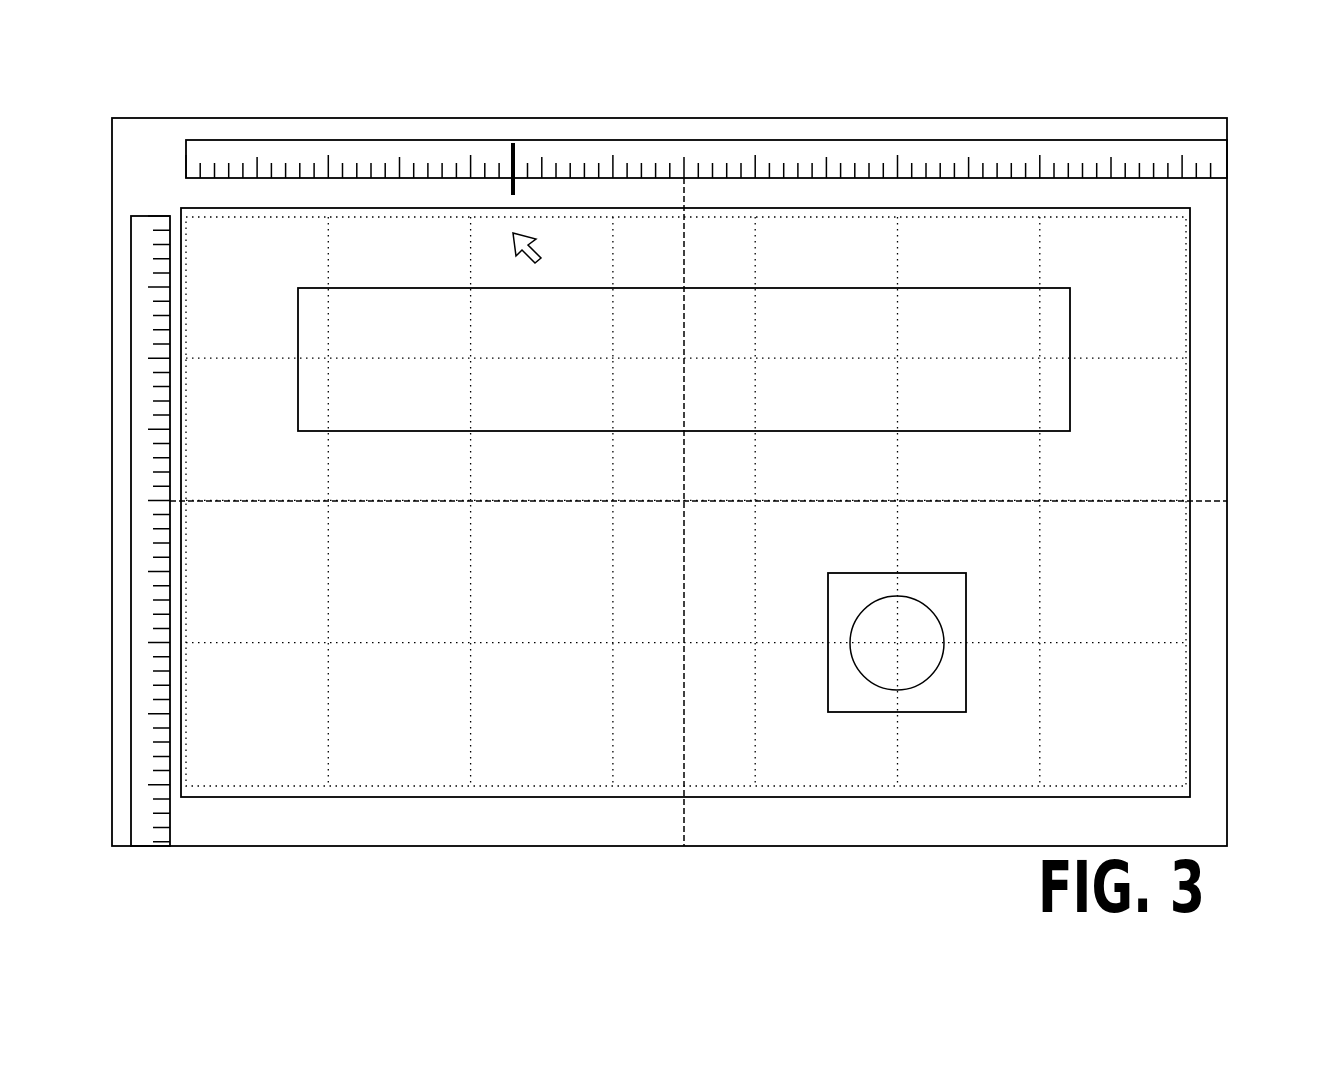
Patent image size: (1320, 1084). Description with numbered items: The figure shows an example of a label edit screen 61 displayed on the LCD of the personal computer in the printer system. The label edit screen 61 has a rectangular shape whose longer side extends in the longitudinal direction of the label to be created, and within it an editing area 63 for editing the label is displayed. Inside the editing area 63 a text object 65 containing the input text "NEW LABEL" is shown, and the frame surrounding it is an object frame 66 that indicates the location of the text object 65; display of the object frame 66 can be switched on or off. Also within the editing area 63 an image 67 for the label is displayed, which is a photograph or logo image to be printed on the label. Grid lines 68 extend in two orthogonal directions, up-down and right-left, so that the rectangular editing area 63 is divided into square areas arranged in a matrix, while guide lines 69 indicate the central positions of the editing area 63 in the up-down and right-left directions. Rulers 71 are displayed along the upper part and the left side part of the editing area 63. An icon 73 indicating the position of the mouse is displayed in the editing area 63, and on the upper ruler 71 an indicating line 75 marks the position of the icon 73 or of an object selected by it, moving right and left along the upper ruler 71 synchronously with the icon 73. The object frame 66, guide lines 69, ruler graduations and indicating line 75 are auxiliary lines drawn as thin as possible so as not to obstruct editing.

The label edit screen 61 is at (1221, 131).
The editing area 63 is at (1155, 573).
The text object 65 is at (891, 352).
The object frame 66 is at (1071, 370).
The image 67 is at (966, 690).
The grid lines 68 is at (1043, 711).
The guide lines 69 is at (1222, 499).
The rulers 71 is at (1062, 150).
The icon 73 is at (540, 242).
The indicating line 75 is at (516, 140).